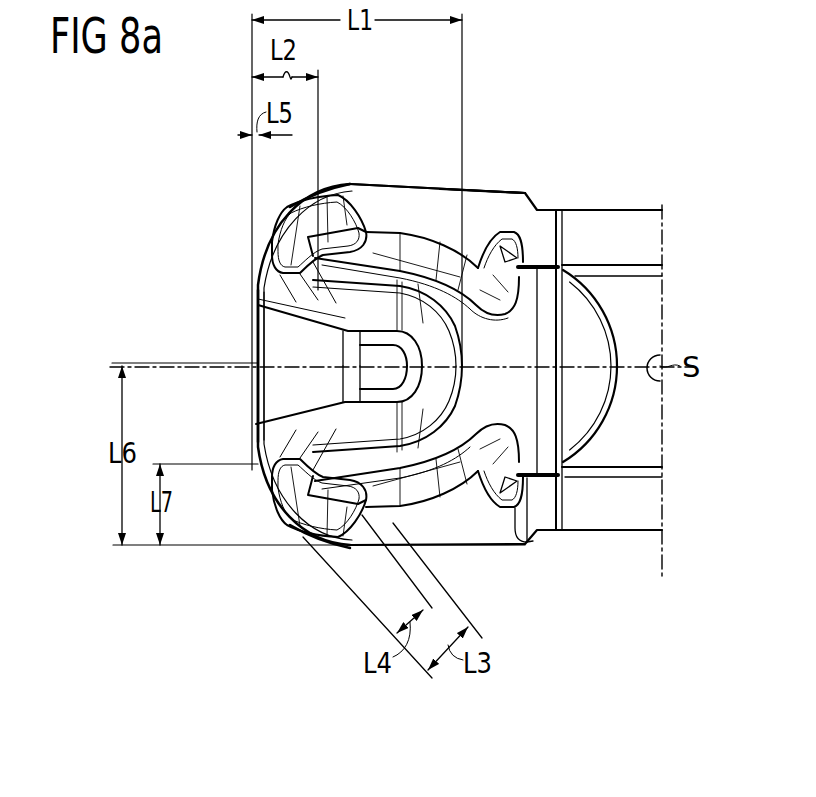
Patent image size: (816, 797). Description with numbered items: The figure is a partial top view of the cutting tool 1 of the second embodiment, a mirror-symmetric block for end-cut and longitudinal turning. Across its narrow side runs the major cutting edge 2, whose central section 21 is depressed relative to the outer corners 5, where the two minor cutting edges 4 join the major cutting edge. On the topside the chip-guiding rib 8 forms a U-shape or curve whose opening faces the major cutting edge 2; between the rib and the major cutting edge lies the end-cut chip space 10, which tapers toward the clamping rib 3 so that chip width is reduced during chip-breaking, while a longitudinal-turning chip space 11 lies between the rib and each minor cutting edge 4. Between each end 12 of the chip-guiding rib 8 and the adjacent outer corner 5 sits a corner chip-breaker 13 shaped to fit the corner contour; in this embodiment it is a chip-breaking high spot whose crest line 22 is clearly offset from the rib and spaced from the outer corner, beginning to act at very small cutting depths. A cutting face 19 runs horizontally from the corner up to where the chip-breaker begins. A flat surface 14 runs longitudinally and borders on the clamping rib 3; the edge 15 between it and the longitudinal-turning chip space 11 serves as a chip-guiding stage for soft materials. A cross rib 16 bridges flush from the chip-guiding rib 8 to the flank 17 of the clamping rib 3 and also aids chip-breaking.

The cutting tool 1 is at (117, 177).
The major cutting edge 2 is at (218, 366).
The central section 21 is at (257, 343).
The clamping rib 3 is at (640, 263).
The minor cutting edge 4 is at (427, 187).
The outer corner 5 is at (270, 210).
The chip-guiding rib 8 is at (390, 232).
The end-cut chip space 10 is at (291, 361).
The cutting face 19 is at (290, 386).
The longitudinal-turning chip space 11 is at (473, 220).
The end of the chip-guiding rib 12 is at (300, 282).
The corner chip-breaker 13 is at (272, 185).
The flat surface 14 is at (587, 235).
The edge 15 is at (518, 522).
The cross rib 16 is at (521, 232).
The flank 17 is at (578, 418).
The crest line 22 is at (270, 233).